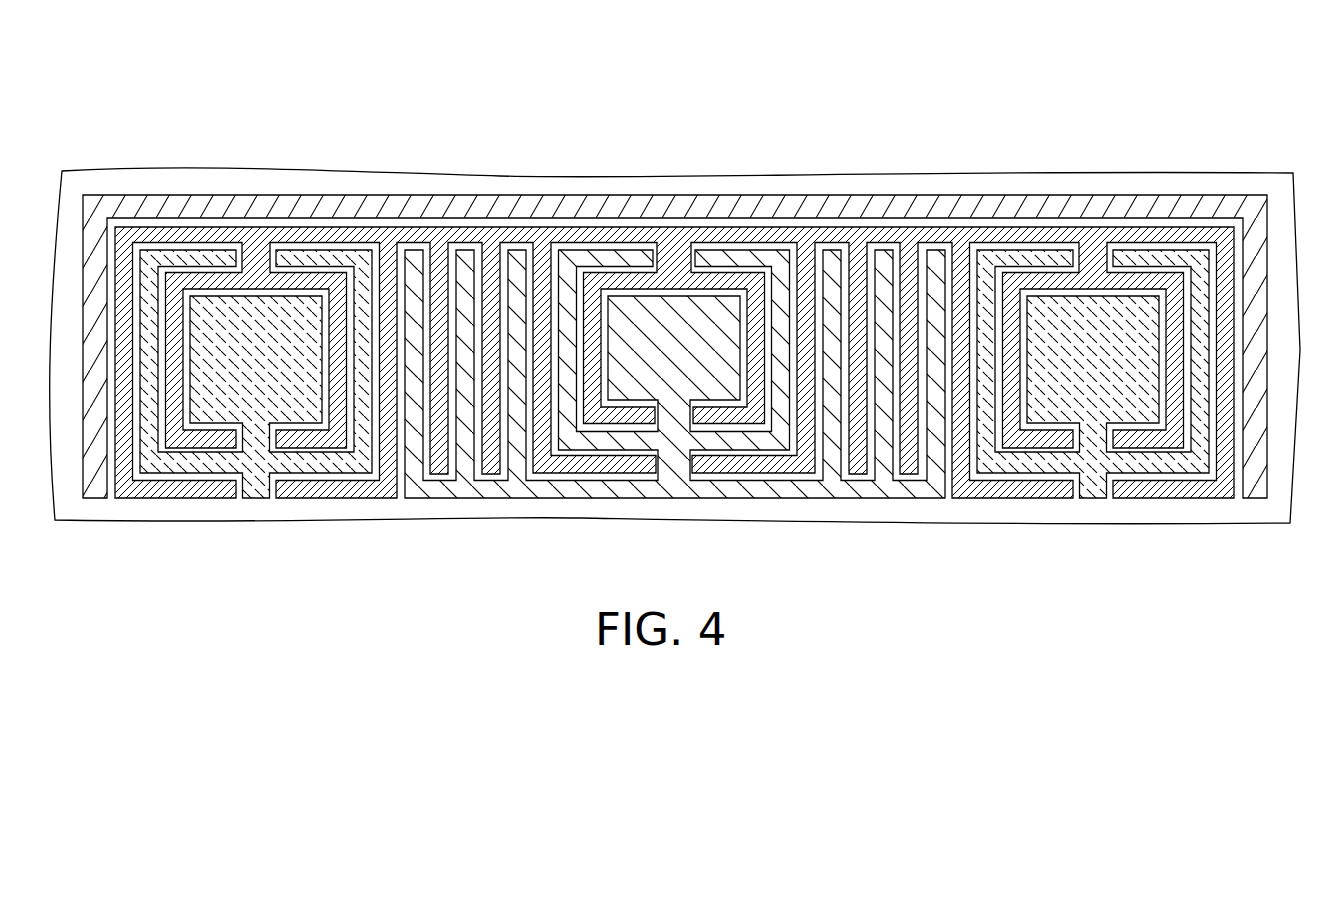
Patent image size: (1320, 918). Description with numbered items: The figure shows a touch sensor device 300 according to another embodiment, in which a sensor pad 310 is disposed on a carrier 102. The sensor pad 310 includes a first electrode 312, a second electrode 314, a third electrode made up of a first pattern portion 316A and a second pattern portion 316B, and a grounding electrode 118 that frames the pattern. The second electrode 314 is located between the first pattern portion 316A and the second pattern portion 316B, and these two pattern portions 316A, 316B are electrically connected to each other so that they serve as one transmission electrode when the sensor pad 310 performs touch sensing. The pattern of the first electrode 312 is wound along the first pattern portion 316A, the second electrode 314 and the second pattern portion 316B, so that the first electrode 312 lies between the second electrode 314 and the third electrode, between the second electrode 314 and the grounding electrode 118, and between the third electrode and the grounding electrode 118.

The carrier 102 is at (1222, 190).
The grounding electrode 118 is at (161, 207).
The sensor pad 310 is at (1087, 84).
The first electrode 312 is at (543, 267).
The second electrode 314 is at (680, 320).
The first pattern portion 316A is at (258, 330).
The second pattern portion 316B is at (1097, 320).
The touch sensor device 300 is at (1300, 597).